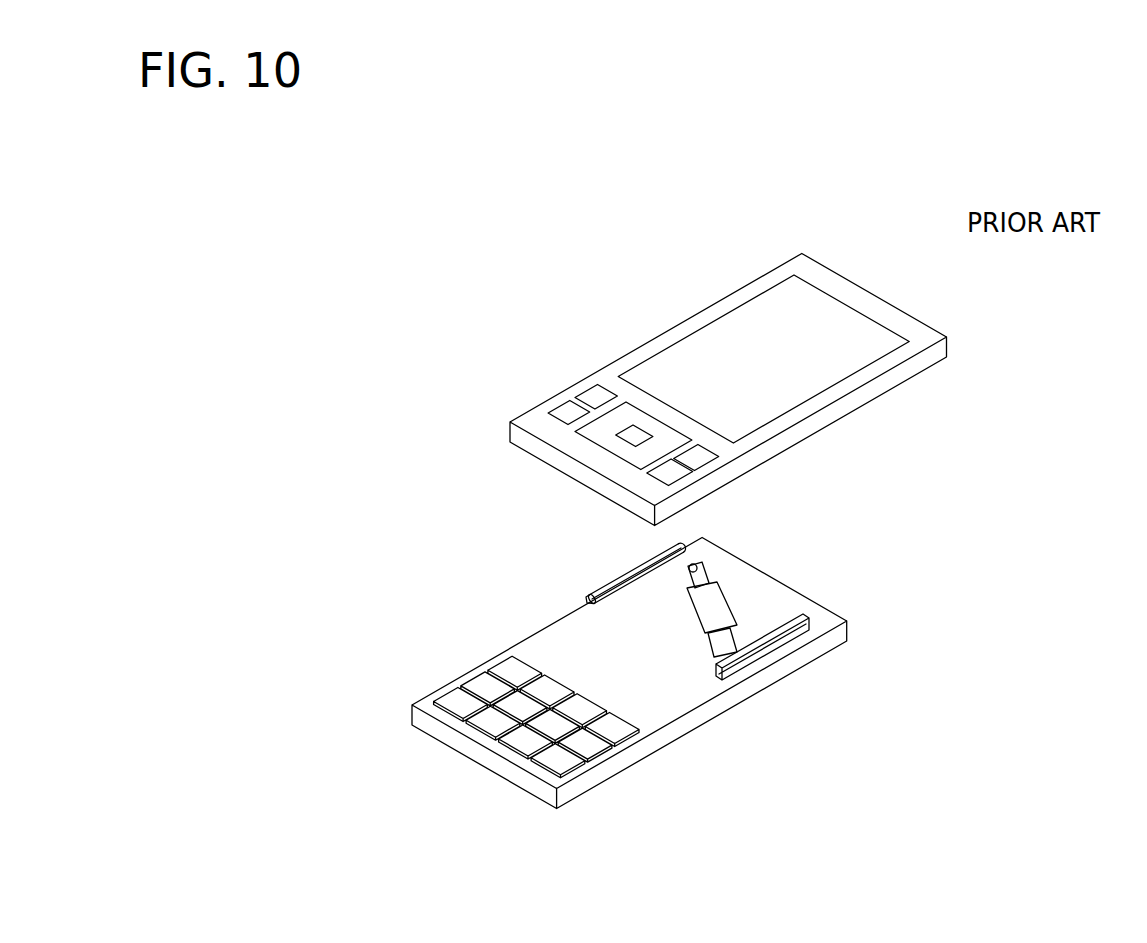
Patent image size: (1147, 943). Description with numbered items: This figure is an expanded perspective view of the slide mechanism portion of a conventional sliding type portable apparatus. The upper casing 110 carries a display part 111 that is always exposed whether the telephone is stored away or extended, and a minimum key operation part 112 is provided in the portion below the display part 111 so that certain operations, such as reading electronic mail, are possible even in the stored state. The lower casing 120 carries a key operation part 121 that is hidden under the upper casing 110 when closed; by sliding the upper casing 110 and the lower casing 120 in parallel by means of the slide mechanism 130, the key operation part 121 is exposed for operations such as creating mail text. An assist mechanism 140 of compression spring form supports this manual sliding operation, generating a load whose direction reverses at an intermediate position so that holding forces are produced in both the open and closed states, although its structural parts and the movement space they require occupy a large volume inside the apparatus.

The upper casing 110 is at (728, 377).
The display part 111 is at (702, 367).
The key operation part 112 is at (618, 420).
The lower casing 120 is at (620, 682).
The key operation part 121 is at (485, 685).
The slide mechanism 130 is at (617, 583).
The assist mechanism 140 is at (710, 607).